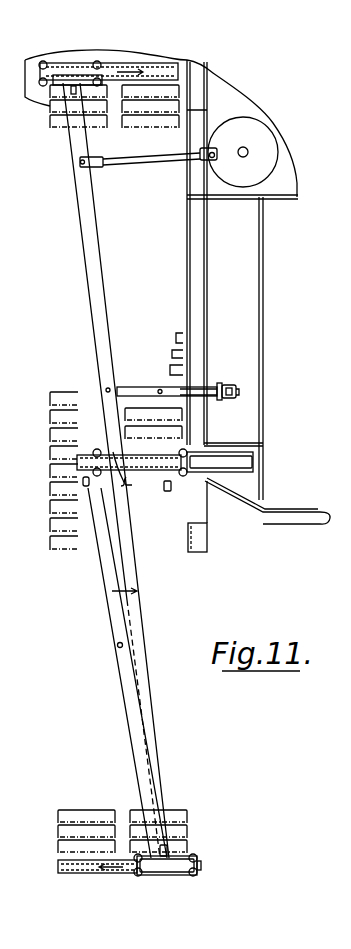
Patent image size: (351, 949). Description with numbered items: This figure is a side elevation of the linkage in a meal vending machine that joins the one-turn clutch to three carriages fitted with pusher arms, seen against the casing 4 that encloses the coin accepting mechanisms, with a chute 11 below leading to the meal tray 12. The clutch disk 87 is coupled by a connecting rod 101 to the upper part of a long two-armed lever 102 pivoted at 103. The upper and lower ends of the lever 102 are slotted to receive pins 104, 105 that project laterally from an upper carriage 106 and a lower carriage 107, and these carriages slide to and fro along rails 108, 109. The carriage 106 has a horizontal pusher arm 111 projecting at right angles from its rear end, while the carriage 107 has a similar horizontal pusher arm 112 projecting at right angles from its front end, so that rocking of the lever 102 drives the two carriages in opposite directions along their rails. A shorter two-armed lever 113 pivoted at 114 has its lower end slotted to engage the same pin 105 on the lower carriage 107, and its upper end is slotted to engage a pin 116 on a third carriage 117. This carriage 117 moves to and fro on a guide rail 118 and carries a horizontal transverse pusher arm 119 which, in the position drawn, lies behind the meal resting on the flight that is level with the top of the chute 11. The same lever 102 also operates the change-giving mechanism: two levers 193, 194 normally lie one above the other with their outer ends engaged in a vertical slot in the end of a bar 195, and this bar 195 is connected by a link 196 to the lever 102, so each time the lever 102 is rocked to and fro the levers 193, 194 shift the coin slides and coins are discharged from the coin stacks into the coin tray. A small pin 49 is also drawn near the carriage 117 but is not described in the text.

The door 4 is at (263, 297).
The chute 11 is at (262, 510).
The meal tray 12 is at (303, 512).
The pin 49 is at (168, 484).
The clutch disk 87 is at (263, 143).
The connecting rod 101 is at (152, 167).
The two-armed lever 102 is at (84, 236).
The pivot 103 is at (130, 480).
The pin 104 is at (70, 82).
The pin 105 is at (165, 857).
The carriage 106 is at (88, 62).
The carriage 107 is at (153, 868).
The rail 108 is at (163, 70).
The rail 109 is at (85, 867).
The pusher arm 111 is at (40, 58).
The pusher arm 112 is at (201, 866).
The two-armed lever 113 is at (98, 577).
The pivot 114 is at (117, 645).
The pin 116 is at (77, 478).
The carriage 117 is at (93, 447).
The guide rail 118 is at (213, 460).
The pusher arm 119 is at (114, 455).
The lever 193 is at (240, 384).
The lever 194 is at (240, 403).
The bar 195 is at (205, 388).
The link 196 is at (142, 387).